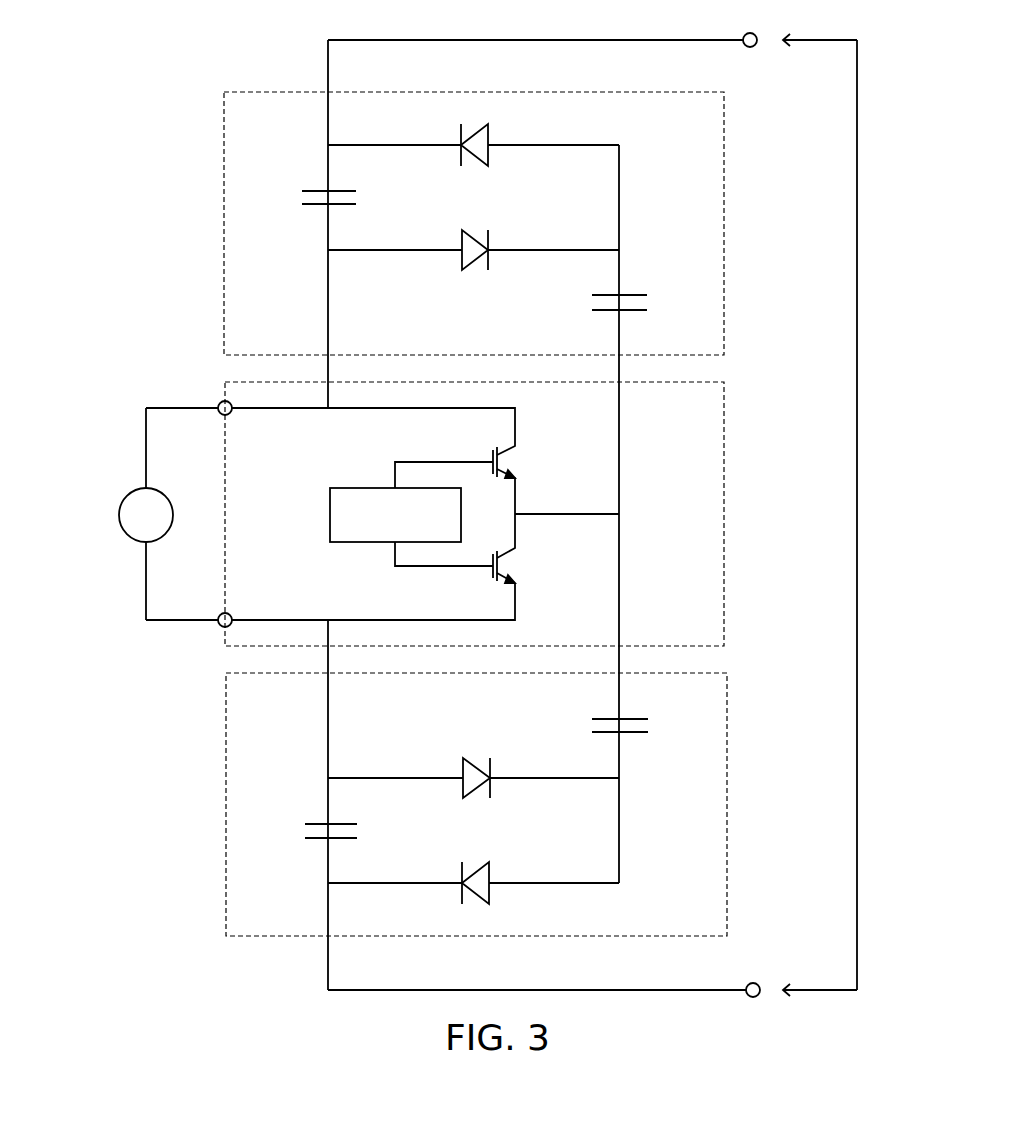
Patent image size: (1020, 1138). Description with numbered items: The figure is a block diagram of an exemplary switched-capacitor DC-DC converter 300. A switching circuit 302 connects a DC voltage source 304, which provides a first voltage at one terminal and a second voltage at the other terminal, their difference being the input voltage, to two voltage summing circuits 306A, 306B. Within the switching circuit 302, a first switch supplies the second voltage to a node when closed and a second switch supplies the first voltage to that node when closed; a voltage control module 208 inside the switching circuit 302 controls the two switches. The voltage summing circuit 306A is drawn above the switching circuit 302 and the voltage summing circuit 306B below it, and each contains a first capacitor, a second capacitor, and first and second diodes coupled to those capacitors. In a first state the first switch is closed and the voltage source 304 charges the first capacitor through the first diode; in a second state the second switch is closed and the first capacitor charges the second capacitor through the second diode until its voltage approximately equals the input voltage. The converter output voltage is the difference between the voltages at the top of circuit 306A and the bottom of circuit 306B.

The high power density switched capacitor converter 300 is at (183, 42).
The switching circuit 302 is at (224, 382).
The voltage source 304 is at (125, 497).
The voltage summing circuit 306A is at (224, 147).
The voltage summing circuit 306B is at (226, 727).
The voltage control module 208 is at (330, 512).